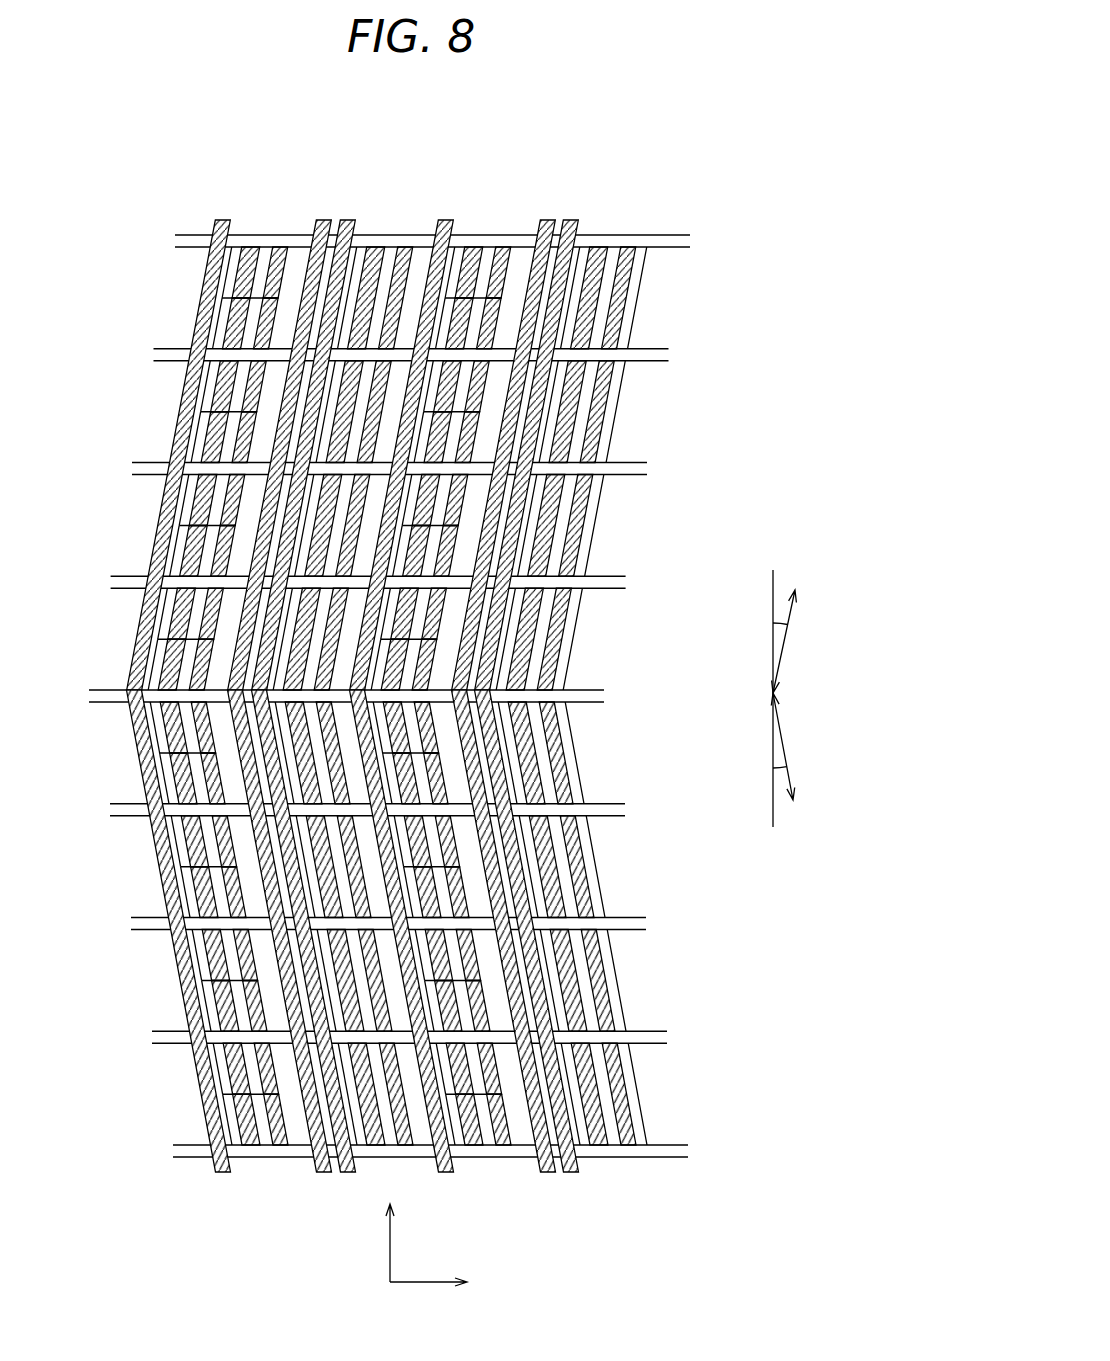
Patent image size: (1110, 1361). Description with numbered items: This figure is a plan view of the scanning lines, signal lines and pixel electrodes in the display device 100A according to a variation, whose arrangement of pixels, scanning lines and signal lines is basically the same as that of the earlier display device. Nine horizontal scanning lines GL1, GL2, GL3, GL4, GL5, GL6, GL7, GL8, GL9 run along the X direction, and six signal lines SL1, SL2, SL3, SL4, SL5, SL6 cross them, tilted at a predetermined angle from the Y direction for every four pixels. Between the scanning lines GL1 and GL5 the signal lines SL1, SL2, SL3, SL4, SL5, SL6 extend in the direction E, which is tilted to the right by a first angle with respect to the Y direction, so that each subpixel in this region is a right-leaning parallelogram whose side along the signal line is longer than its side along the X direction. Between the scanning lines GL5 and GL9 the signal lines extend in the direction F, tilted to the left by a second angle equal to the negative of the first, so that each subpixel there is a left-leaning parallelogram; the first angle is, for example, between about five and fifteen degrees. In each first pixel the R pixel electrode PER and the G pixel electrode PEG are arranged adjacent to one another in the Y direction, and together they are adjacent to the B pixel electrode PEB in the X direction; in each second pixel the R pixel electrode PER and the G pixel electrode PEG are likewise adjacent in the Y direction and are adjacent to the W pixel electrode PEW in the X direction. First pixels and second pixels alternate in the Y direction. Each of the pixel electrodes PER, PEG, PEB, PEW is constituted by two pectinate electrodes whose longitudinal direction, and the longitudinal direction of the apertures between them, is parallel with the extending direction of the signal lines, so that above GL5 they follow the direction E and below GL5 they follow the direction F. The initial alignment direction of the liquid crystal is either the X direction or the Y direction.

The display device 100A is at (449, 130).
The signal line SL1 is at (219, 221).
The signal line SL2 is at (326, 221).
The signal line SL3 is at (348, 221).
The signal line SL4 is at (445, 221).
The signal line SL5 is at (546, 221).
The signal line SL6 is at (568, 221).
The scanning line GL1 is at (691, 241).
The scanning line GL2 is at (670, 355).
The scanning line GL3 is at (648, 469).
The scanning line GL4 is at (627, 582).
The scanning line GL5 is at (605, 696).
The scanning line GL6 is at (626, 810).
The scanning line GL7 is at (647, 923).
The scanning line GL8 is at (668, 1037).
The scanning line GL9 is at (689, 1151).
The G pixel electrode PEG is at (236, 278).
The R pixel electrode PER is at (228, 320).
The B pixel electrode PEB is at (626, 299).
The W pixel electrode PEW is at (604, 413).
The direction E is at (782, 652).
The direction F is at (781, 738).
The X direction X is at (439, 1282).
The Y direction Y is at (389, 1228).